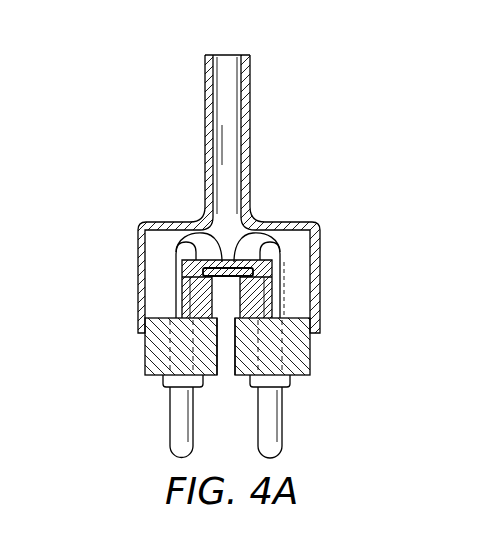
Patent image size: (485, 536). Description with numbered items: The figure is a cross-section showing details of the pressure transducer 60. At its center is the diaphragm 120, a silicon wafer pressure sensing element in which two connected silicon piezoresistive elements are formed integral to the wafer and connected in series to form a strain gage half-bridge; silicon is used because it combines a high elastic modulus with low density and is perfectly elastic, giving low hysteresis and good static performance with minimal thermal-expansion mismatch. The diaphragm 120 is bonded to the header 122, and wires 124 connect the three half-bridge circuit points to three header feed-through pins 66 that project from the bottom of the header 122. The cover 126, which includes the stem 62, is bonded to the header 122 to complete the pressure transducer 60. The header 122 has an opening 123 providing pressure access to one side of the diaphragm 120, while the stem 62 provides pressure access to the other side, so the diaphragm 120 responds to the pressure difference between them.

The pressure transducer 60 is at (348, 263).
The stem 62 is at (251, 112).
The header feed-through pins 66 is at (173, 423).
The diaphragm 120 is at (238, 260).
The header 122 is at (310, 354).
The opening 123 is at (228, 365).
The wires 124 is at (196, 237).
The cover 126 is at (138, 292).